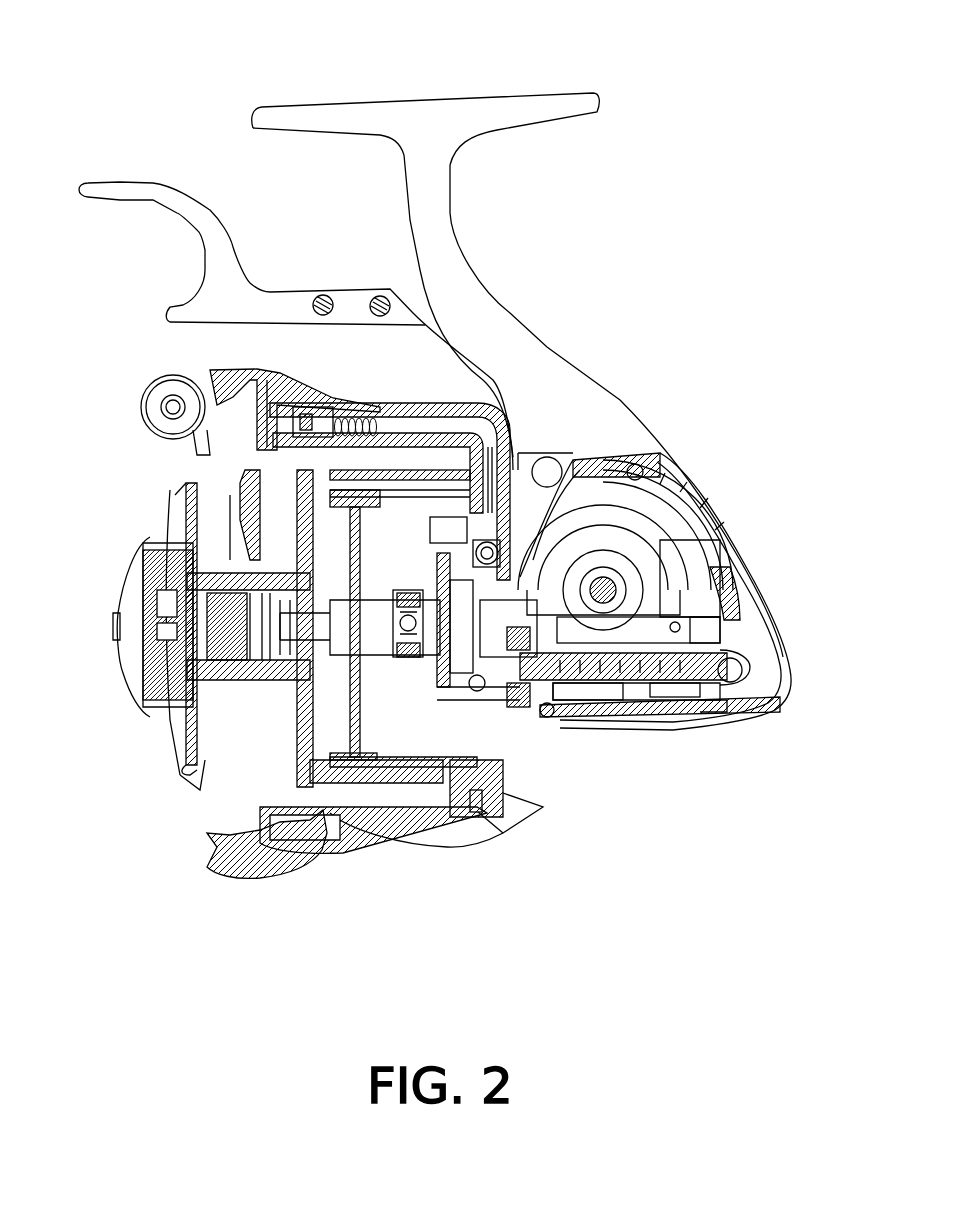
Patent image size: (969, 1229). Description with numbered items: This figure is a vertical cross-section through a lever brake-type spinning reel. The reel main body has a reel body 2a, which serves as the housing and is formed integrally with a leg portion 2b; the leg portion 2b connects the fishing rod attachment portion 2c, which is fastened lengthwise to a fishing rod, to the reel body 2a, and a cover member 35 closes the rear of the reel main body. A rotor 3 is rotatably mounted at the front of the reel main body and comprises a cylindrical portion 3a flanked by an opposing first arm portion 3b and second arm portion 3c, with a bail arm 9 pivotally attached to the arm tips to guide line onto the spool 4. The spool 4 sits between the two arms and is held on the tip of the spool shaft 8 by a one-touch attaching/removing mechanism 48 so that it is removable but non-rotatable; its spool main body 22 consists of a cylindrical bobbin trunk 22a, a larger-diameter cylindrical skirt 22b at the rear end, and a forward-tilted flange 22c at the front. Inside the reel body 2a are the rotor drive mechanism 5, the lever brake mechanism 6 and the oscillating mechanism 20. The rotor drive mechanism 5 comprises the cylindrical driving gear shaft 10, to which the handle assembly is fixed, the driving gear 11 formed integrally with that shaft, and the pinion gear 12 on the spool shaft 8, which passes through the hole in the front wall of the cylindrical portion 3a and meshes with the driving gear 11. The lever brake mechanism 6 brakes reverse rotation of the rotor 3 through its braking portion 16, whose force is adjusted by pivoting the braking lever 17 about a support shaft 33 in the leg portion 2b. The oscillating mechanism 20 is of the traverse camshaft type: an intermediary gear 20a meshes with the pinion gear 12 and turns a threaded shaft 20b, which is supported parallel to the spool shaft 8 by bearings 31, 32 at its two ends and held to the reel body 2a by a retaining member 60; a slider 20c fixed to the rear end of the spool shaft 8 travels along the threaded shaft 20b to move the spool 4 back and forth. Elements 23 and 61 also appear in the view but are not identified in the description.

The reel body 2a is at (753, 660).
The leg portion 2b is at (500, 318).
The fishing rod attachment portion 2c is at (440, 118).
The rotor 3 is at (435, 858).
The cylindrical portion 3a is at (352, 758).
The first arm portion 3b is at (413, 510).
The second arm portion 3c is at (478, 812).
The spool 4 is at (251, 757).
The rotor drive mechanism 5 is at (603, 515).
The lever brake mechanism 6 is at (432, 500).
The spool shaft 8 is at (300, 625).
The bail arm 9 is at (148, 370).
The driving gear shaft 10 is at (613, 573).
The driving gear 11 is at (653, 510).
The pinion gear 12 is at (513, 710).
The braking portion 16 is at (427, 507).
The braking lever 17 is at (303, 270).
The oscillating mechanism 20 is at (622, 700).
The intermediary gear 20a is at (527, 710).
The threaded shaft 20b is at (673, 727).
The slider 20c is at (717, 560).
The spool main body 22 is at (253, 500).
The bobbin trunk 22a is at (220, 680).
The cylindrical skirt 22b is at (330, 783).
The flange 22c is at (203, 750).
The drag mechanism 23 is at (223, 573).
The bearing 31 is at (480, 812).
The bearing 32 is at (713, 717).
The support shaft 33 is at (547, 457).
The cover member 35 is at (697, 560).
The one-touch attaching/removing mechanism 48 is at (97, 635).
The retaining member 60 is at (753, 665).
The clutch roller 61 is at (742, 590).